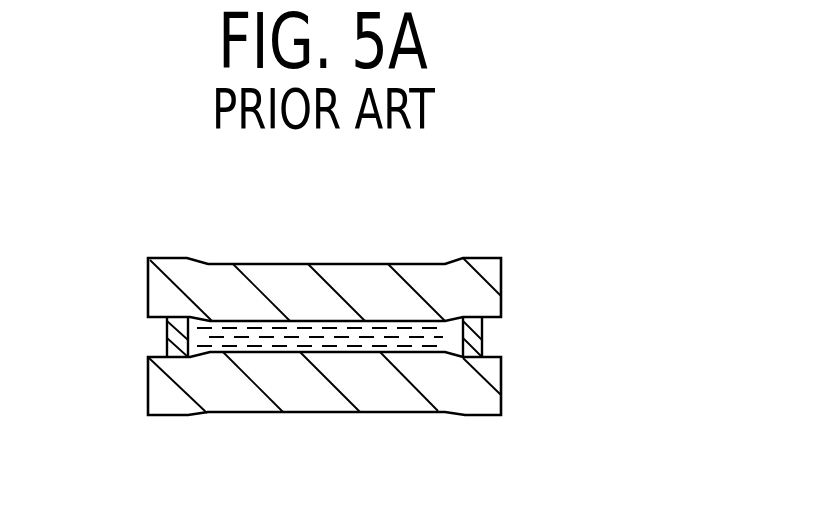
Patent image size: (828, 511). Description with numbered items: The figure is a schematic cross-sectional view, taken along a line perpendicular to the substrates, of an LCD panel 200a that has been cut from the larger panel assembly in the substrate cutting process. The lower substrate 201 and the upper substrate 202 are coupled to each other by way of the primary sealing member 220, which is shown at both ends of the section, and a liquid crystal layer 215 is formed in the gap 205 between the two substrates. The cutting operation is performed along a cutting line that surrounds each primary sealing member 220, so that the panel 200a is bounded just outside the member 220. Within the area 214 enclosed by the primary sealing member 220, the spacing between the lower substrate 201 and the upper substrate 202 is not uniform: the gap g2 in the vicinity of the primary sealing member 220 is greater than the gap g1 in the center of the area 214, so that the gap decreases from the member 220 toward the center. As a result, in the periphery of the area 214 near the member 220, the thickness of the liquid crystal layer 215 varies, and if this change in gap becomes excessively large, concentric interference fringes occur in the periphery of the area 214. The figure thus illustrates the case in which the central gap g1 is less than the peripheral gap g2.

The LCD panel 200a is at (562, 192).
The upper substrate 202 is at (483, 288).
The lower substrate 201 is at (485, 392).
The primary sealing member 220 is at (472, 332).
The area 214 is at (453, 235).
The gap 205 is at (137, 313).
The liquid crystal layer 215 is at (421, 340).
The gap at the center of the area g1 is at (325, 290).
The gap in the vicinity of the primary sealing member g2 is at (192, 280).